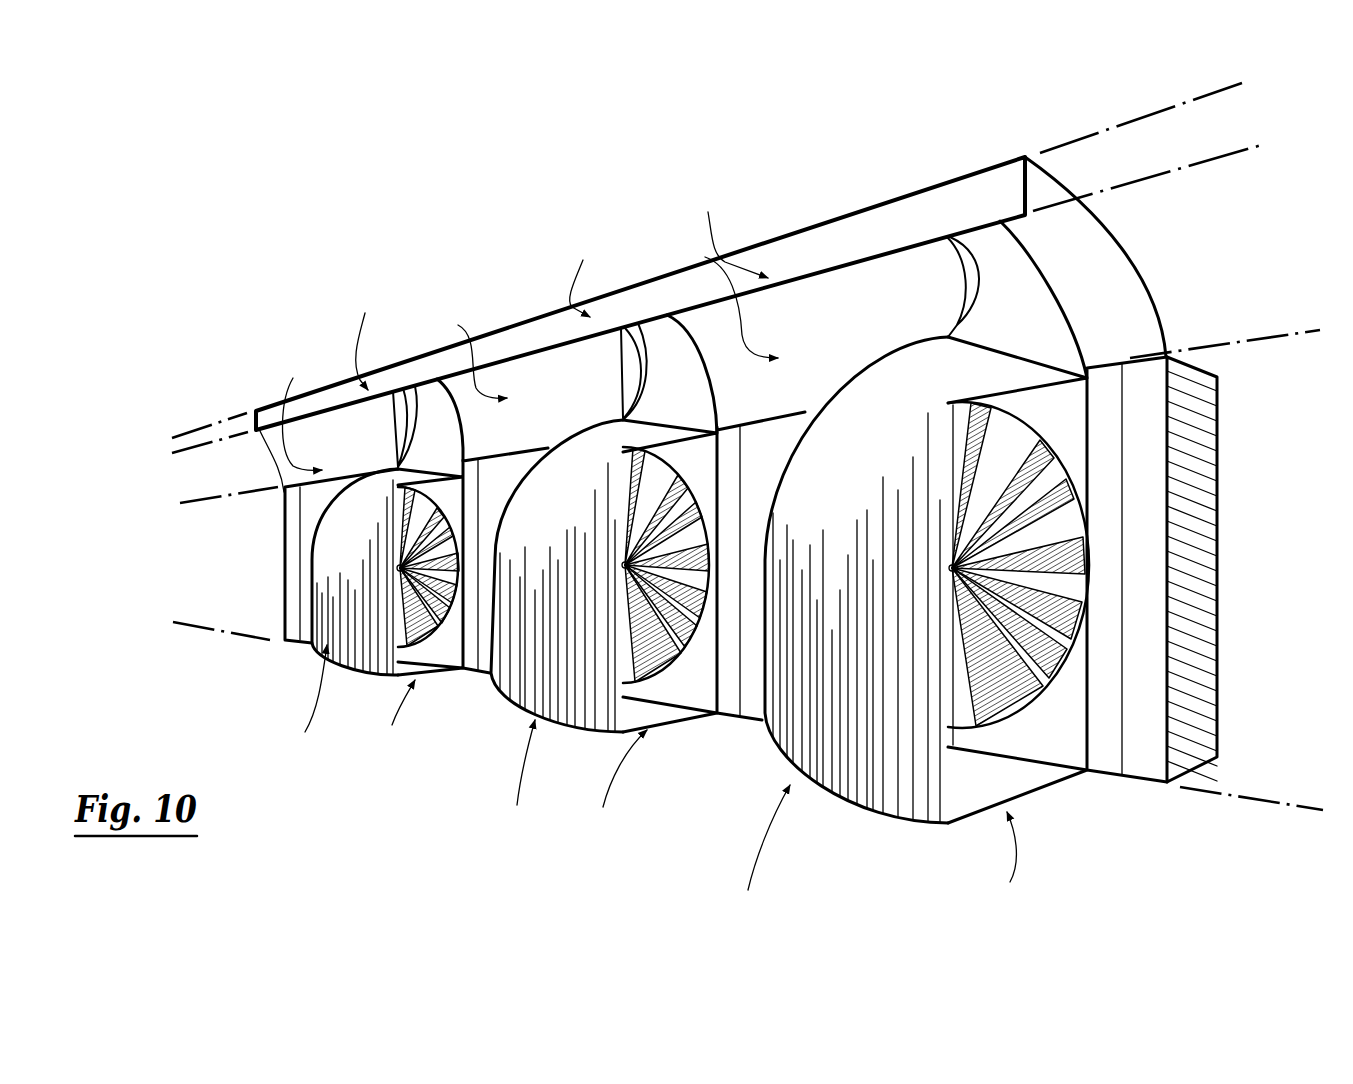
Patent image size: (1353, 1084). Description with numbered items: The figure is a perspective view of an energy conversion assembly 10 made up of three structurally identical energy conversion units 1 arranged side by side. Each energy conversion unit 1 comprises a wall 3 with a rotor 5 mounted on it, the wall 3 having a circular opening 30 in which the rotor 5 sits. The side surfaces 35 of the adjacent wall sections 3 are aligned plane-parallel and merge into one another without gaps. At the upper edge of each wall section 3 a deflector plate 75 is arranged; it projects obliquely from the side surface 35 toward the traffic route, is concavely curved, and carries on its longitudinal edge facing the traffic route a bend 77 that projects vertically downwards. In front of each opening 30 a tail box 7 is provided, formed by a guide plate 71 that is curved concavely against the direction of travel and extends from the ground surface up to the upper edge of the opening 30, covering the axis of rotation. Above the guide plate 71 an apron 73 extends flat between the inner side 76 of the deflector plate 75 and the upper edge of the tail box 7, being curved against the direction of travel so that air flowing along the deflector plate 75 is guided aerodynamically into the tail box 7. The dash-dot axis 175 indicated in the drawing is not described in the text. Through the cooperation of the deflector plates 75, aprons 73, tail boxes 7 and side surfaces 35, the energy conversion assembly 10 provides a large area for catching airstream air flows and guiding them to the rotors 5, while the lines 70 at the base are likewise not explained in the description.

The energy conversion assembly 10 is at (347, 203).
The energy conversion unit 1 is at (265, 364).
The axis 175 is at (1123, 211).
The wall 3 is at (307, 643).
The rotor 5 is at (1023, 500).
The tail box 7 is at (540, 782).
The opening 30 is at (447, 632).
The side surface 35 is at (497, 625).
The base plate 70 is at (697, 795).
The guide plate 71 is at (374, 636).
The apron 73 is at (428, 415).
The deflector plate 75 is at (342, 448).
The inner side 76 is at (530, 351).
The bend 77 is at (560, 288).